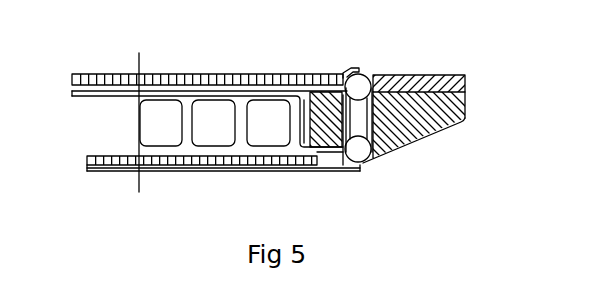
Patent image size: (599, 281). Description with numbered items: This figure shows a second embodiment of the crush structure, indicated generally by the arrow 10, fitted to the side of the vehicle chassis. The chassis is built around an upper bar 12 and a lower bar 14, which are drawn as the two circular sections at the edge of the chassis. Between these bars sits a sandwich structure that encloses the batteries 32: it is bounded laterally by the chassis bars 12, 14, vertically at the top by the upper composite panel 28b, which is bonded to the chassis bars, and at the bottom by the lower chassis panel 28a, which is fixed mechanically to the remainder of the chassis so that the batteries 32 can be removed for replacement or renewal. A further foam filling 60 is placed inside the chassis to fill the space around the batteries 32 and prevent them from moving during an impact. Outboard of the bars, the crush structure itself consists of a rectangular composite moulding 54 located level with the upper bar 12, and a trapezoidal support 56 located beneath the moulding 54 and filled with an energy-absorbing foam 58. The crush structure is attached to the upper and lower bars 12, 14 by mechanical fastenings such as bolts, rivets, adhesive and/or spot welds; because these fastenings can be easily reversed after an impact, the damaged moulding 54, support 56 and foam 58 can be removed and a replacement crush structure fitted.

The aircraft structure / panel arrangement 10 is at (90, 139).
The upper bar 12 is at (363, 86).
The lower bar 14 is at (363, 152).
The lower chassis panel 28a is at (189, 160).
The upper composite panel 28b is at (241, 80).
The batteries 32 is at (270, 130).
The rectangular composite moulding 54 is at (414, 86).
The trapezoidal support 56 is at (460, 123).
The energy-absorbing foam 58 is at (420, 135).
The further foam filling 60 is at (325, 132).